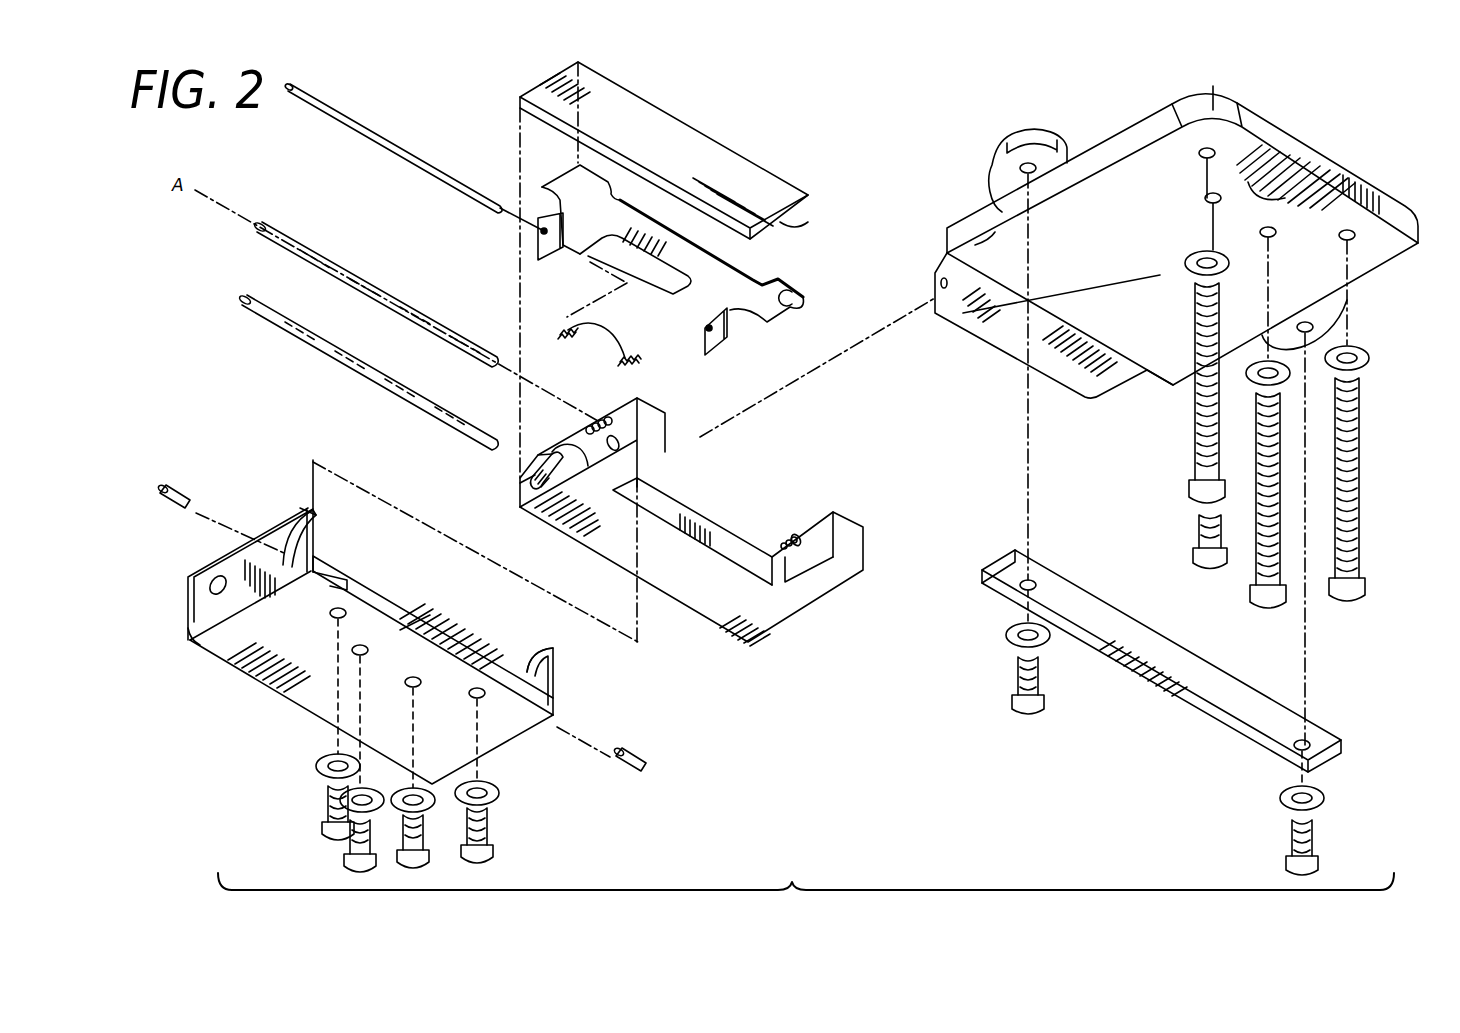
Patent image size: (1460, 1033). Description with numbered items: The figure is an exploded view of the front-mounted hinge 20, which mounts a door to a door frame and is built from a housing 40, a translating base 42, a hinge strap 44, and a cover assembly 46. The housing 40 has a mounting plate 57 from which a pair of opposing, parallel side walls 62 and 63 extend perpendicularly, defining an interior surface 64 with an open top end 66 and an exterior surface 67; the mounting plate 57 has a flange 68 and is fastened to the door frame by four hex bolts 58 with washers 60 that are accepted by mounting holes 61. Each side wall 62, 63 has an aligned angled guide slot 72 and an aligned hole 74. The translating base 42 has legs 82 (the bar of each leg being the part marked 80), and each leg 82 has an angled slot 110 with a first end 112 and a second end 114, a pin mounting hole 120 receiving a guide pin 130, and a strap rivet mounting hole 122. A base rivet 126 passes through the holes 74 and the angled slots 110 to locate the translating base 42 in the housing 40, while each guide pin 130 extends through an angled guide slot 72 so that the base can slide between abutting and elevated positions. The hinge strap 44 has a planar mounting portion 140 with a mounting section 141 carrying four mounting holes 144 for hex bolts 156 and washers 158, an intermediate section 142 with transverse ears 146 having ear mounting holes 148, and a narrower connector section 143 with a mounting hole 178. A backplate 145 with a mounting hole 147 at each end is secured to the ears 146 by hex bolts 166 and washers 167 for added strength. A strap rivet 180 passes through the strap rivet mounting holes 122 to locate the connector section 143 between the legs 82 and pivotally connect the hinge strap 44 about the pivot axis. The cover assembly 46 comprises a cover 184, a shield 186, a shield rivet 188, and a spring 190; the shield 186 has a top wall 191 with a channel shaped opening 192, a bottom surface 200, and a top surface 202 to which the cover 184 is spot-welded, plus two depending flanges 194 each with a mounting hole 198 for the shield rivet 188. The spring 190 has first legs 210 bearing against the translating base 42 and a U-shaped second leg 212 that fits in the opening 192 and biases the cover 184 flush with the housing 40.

The front-mounted hinge 20 is at (791, 886).
The housing 40 is at (225, 648).
The translating base 42 is at (745, 602).
The hinge strap 44 is at (1165, 370).
The cover assembly 46 is at (783, 222).
The mounting plate 57 is at (320, 700).
The hex bolts 58 is at (482, 860).
The washers 60 is at (502, 790).
The mounting holes 61 is at (472, 692).
The side wall 62 is at (248, 560).
The side wall 63 is at (528, 670).
The interior surface 64 is at (330, 575).
The open top end 66 is at (395, 595).
The exterior surface 67 is at (208, 607).
The flange 68 is at (413, 630).
The angled guide slot 72 is at (283, 523).
The hole 74 is at (208, 587).
The slide bar 80 is at (687, 587).
The leg 82 is at (592, 428).
The angled slot 110 is at (533, 469).
The first end 112 is at (590, 468).
The second end 114 is at (520, 485).
The pin mounting hole 120 is at (617, 452).
The strap rivet mounting hole 122 is at (609, 421).
The base rivet 126 is at (353, 373).
The guide pin 130 is at (184, 492).
The planar mounting portion 140 is at (1160, 158).
The mounting section 141 is at (1308, 170).
The intermediate section 142 is at (1002, 232).
The connector section 143 is at (1002, 328).
The mounting holes 144 is at (1355, 234).
The backplate 145 is at (1190, 687).
The ears 146 is at (1010, 153).
The mounting hole 147 is at (1017, 593).
The ear mounting hole 148 is at (1067, 153).
The hex bolts 156 is at (1350, 597).
The washers 158 is at (1370, 360).
The hex bolts 166 is at (1025, 715).
The washers 167 is at (1007, 638).
The mounting hole 178 is at (938, 273).
The strap rivet 180 is at (357, 280).
The cover 184 is at (673, 118).
The shield 186 is at (608, 213).
The shield rivet 188 is at (410, 125).
The spring 190 is at (641, 363).
The top wall 191 is at (805, 302).
The channel shaped opening 192 is at (645, 256).
The depending flanges 194 is at (547, 258).
The mounting hole 198 is at (541, 231).
The bottom surface 200 is at (753, 306).
The top surface 202 is at (754, 280).
The first legs 210 is at (643, 383).
The second leg 212 is at (630, 330).